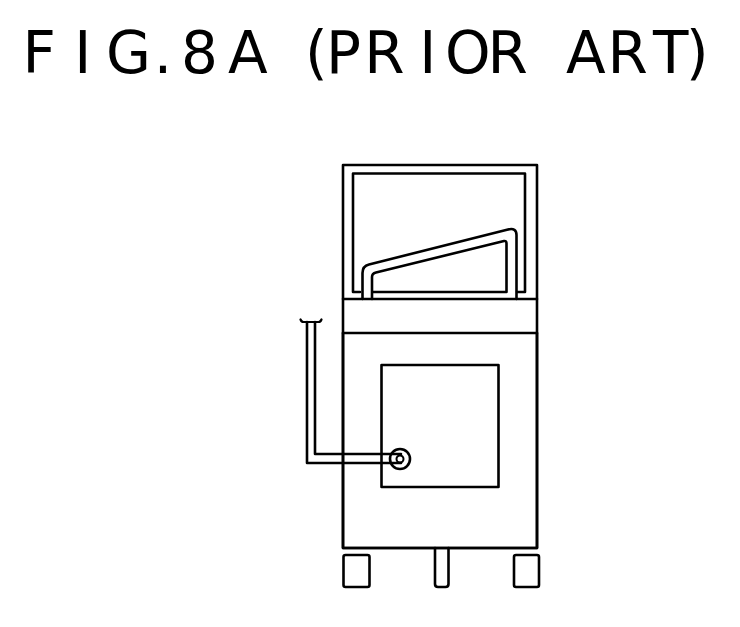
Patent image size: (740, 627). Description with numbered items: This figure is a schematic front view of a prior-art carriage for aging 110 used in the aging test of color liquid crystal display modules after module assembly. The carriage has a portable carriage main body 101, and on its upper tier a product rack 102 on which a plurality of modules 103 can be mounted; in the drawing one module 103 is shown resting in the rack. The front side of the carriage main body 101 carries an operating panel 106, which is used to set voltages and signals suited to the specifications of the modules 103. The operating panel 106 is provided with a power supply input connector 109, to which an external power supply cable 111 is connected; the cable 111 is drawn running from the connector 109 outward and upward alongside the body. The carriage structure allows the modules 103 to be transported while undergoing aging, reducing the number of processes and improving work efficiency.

The carriage for aging 110 is at (578, 201).
The modules 103 is at (493, 188).
The product rack 102 is at (513, 316).
The carriage main body 101 is at (502, 523).
The operating panel 106 is at (486, 415).
The external power supply cable 111 is at (305, 346).
The power supply input connector 109 is at (382, 465).